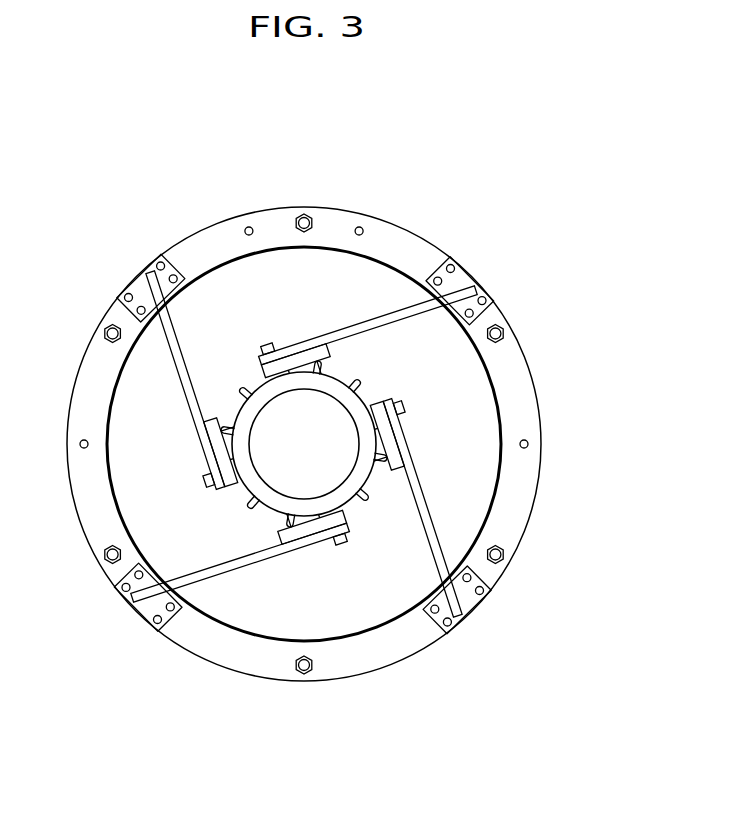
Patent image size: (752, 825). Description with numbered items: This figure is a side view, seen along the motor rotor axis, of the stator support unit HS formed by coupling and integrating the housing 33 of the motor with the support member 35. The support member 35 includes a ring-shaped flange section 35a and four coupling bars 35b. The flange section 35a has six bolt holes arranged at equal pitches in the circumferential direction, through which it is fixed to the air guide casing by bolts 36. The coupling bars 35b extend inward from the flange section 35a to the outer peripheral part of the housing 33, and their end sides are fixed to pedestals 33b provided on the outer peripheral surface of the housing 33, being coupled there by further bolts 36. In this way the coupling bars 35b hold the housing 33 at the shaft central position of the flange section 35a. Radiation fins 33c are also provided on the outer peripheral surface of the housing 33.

The stator support unit HS is at (442, 196).
The housing 33 is at (320, 422).
The pedestals 33b is at (283, 365).
The radiation fins 33c is at (358, 381).
The support member 35 is at (351, 444).
The flange section 35a is at (522, 408).
The coupling bars 35b is at (358, 327).
The bolts 36 is at (303, 215).